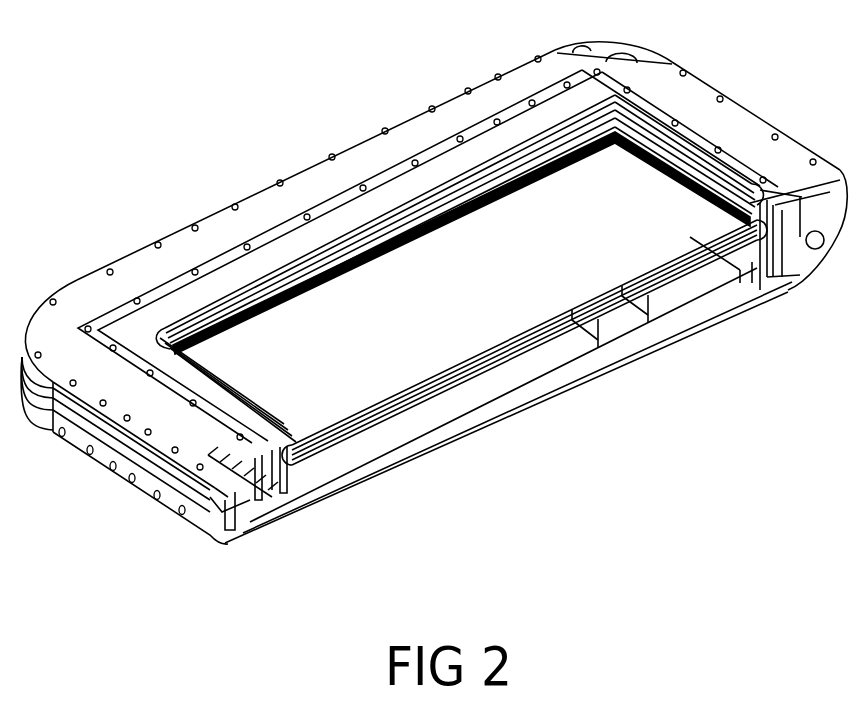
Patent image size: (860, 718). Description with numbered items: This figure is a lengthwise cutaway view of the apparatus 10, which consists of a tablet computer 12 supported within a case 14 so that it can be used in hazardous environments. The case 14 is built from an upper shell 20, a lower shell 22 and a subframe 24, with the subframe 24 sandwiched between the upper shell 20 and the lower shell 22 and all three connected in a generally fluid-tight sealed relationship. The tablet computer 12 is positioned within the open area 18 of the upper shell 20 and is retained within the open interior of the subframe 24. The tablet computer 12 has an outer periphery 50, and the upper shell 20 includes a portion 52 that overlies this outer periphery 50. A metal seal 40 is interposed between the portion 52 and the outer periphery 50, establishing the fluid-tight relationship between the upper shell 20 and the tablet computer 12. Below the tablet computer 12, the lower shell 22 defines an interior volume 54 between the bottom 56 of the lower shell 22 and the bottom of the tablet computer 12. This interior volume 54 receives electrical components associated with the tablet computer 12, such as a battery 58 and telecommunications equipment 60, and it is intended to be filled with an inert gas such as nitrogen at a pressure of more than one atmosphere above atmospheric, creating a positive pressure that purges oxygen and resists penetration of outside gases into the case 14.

The apparatus 10 is at (748, 78).
The tablet computer 12 is at (456, 307).
The case 14 is at (757, 137).
The open area 18 is at (655, 137).
The upper shell 20 is at (372, 145).
The lower shell 22 is at (845, 225).
The subframe 24 is at (850, 190).
The metal seal 40 is at (262, 322).
The outer periphery 50 is at (280, 495).
The portion 52 is at (292, 445).
The interior volume 54 is at (618, 335).
The bottom 56 is at (523, 407).
The battery 58 is at (428, 413).
The telecommunications equipment 60 is at (698, 285).